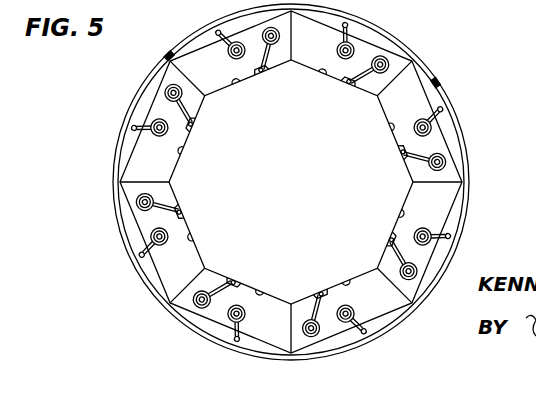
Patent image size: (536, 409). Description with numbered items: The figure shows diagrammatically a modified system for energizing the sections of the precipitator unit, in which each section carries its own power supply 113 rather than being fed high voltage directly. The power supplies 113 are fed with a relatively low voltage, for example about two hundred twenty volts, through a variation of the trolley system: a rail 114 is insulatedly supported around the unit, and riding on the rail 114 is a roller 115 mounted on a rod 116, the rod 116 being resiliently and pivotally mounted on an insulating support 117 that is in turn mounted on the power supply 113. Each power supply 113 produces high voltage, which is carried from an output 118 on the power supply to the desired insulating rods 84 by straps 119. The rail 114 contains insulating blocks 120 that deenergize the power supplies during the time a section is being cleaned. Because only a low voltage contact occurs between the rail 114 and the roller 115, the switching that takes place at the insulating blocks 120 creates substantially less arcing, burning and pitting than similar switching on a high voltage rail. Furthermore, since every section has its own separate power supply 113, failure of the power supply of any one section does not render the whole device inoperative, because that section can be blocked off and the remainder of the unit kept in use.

The insulating rods 84 is at (397, 239).
The power supply 113 is at (435, 207).
The rail 114 is at (465, 147).
The roller 115 is at (451, 235).
The rod 116 is at (450, 241).
The insulating support 117 is at (429, 246).
The output 118 is at (318, 335).
The straps 119 is at (317, 317).
The insulating blocks 120 is at (442, 83).